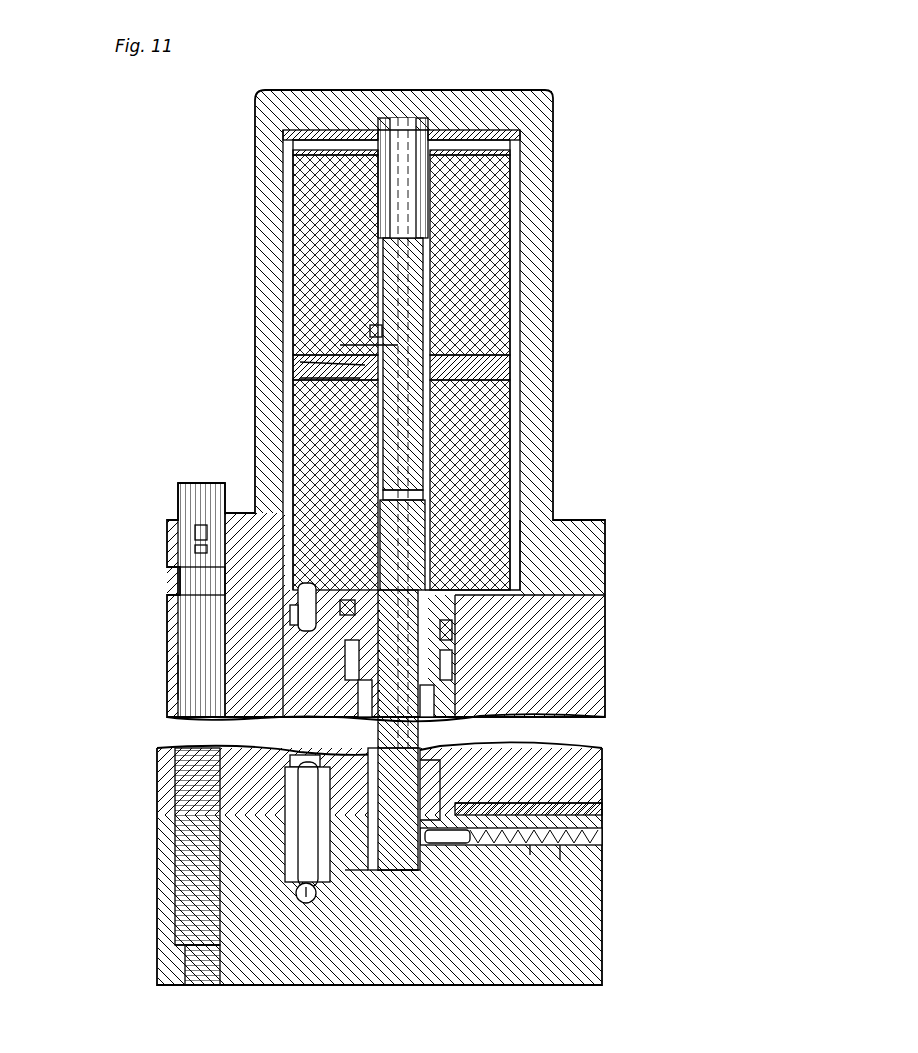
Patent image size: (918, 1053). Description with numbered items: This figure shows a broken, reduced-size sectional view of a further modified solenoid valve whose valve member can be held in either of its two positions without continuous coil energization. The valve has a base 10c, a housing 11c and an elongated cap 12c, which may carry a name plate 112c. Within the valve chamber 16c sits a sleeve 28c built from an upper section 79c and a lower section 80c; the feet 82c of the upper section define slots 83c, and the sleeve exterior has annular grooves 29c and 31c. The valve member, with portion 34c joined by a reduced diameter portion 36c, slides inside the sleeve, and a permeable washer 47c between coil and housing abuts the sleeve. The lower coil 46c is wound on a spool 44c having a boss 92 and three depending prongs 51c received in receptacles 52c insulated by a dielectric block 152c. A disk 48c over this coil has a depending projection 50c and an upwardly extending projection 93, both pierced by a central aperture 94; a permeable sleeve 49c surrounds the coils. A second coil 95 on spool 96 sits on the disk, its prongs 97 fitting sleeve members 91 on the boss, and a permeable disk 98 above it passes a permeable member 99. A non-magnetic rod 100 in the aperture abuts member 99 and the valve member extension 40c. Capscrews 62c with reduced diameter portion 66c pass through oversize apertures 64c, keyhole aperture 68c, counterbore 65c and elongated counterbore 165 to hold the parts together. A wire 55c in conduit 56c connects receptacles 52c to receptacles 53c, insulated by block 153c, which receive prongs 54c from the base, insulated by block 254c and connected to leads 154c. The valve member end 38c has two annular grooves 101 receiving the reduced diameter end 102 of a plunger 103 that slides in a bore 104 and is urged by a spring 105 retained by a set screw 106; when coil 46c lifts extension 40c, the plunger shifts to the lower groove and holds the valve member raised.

The name plate 112c is at (385, 90).
The permeable disk 98 is at (378, 128).
The permeable member 99 is at (388, 184).
The spool 96 is at (432, 196).
The coil 95 is at (482, 206).
The sleeve 49c is at (527, 222).
The upwardly extending projection 93 is at (383, 262).
The non-magnetic rod 100 is at (380, 302).
The cap 12c is at (564, 329).
The prongs 97 is at (340, 345).
The through central aperture 94 is at (372, 332).
The boss 92 is at (365, 366).
The disk 48c is at (482, 372).
The sleeve members 91 is at (360, 378).
The depending projection 50c is at (375, 396).
The coil 46c is at (495, 412).
The spool 44c is at (370, 432).
The elongated counterbore 165 is at (370, 512).
The counterbore 65c is at (192, 505).
The upper section 79c is at (300, 526).
The valve member extension 40c is at (433, 530).
The reduced diameter portion 66c is at (195, 532).
The keyhole shaped through aperture 68c is at (195, 548).
The prongs 51c is at (298, 588).
The dielectric sleeve or block 152c is at (225, 592).
The receptacles 52c is at (290, 610).
The washer 47c is at (500, 598).
The sleeve 28c is at (470, 621).
The slots 83c is at (340, 626).
The oversize apertures 64c is at (178, 656).
The annular groove 29c is at (452, 663).
The connecting conduit 56c is at (345, 680).
The feet 82c is at (452, 682).
The wire 55c is at (358, 700).
The portion of valve member 34c is at (434, 705).
The reduced diameter portion 36c is at (380, 738).
The valve chamber 16c is at (448, 750).
The capscrews 62c is at (290, 762).
The receptacles 53c is at (285, 782).
The annular groove 31c is at (602, 770).
The housing 11c is at (616, 789).
The prongs 54c is at (190, 802).
The lower section 80c is at (602, 809).
The dielectric sleeve or block 153c is at (298, 820).
The dielectric sleeve or block 254c is at (300, 838).
The bore 104 is at (602, 840).
The leads 154c is at (300, 871).
The set screw 106 is at (560, 848).
The spring 105 is at (530, 848).
The base 10c is at (274, 990).
The annular grooves 101 is at (368, 830).
The valve member end 38c is at (382, 870).
The reduced diameter end 102 is at (412, 872).
The plunger 103 is at (440, 870).